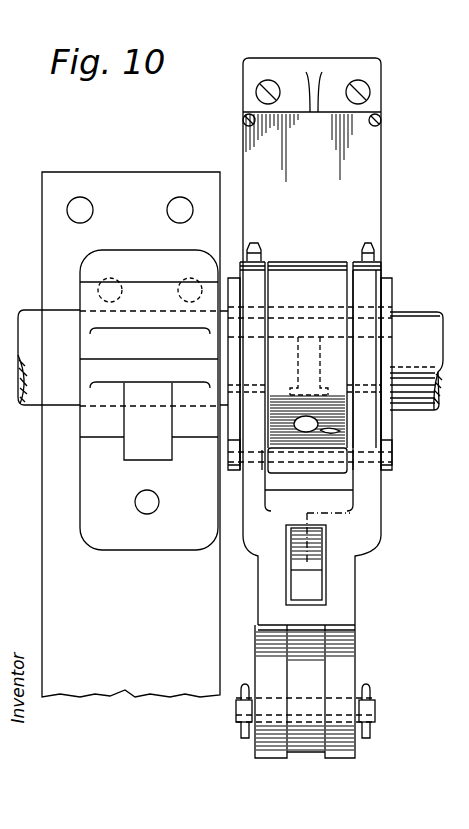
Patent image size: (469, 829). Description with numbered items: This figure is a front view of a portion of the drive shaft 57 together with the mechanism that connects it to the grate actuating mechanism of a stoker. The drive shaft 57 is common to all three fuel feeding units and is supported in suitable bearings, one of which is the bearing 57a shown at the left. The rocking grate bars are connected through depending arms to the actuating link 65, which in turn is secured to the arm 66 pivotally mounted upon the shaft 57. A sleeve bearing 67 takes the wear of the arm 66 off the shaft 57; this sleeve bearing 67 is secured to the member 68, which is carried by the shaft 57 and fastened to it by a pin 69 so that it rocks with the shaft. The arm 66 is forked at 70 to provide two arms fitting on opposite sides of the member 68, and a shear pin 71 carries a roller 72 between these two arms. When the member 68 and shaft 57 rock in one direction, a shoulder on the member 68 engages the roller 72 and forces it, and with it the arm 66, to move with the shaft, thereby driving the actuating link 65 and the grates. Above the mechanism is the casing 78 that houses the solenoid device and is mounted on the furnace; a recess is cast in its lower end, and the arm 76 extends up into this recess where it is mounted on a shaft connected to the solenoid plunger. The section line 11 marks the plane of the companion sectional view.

The section line 11- 11 is at (353, 257).
The drive shaft 57 is at (417, 323).
The bearing 57a is at (150, 538).
The actuating link 65 is at (315, 678).
The arm 66 is at (350, 608).
The sleeve bearing 67 is at (365, 308).
The member 68 is at (315, 263).
The pin 69 is at (342, 425).
The fork 70 is at (315, 495).
The shear pin 71 is at (388, 463).
The roller 72 is at (355, 450).
The arm 76 is at (305, 383).
The casing 78 is at (382, 156).